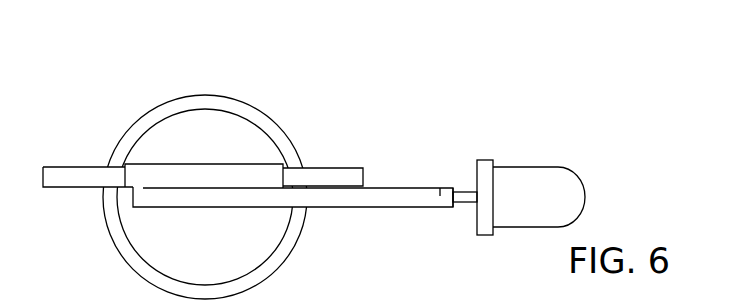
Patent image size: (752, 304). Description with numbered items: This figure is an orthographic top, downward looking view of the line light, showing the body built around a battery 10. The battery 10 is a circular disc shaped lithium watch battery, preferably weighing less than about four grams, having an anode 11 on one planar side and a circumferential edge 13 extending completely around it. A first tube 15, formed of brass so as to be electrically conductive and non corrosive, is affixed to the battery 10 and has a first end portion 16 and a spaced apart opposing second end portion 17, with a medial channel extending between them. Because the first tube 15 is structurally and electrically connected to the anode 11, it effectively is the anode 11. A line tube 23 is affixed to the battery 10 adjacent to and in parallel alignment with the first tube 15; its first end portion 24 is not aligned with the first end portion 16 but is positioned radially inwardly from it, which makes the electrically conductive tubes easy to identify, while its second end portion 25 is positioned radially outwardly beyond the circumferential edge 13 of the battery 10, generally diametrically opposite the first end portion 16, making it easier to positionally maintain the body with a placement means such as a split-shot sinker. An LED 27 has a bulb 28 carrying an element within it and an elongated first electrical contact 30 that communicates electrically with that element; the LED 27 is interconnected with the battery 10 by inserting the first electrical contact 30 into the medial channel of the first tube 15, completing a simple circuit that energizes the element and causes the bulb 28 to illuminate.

The battery 10 is at (192, 72).
The anode 11 is at (185, 252).
The circumferential edge 13 is at (142, 115).
The first tube 15 is at (327, 193).
The first end portion 16 is at (442, 195).
The second end portion 17 is at (145, 198).
The line tube 23 is at (329, 135).
The first end portion 24 is at (357, 177).
The second end portion 25 is at (53, 166).
The LED 27 is at (544, 153).
The bulb 28 is at (552, 185).
The first electrical contact 30 is at (463, 202).